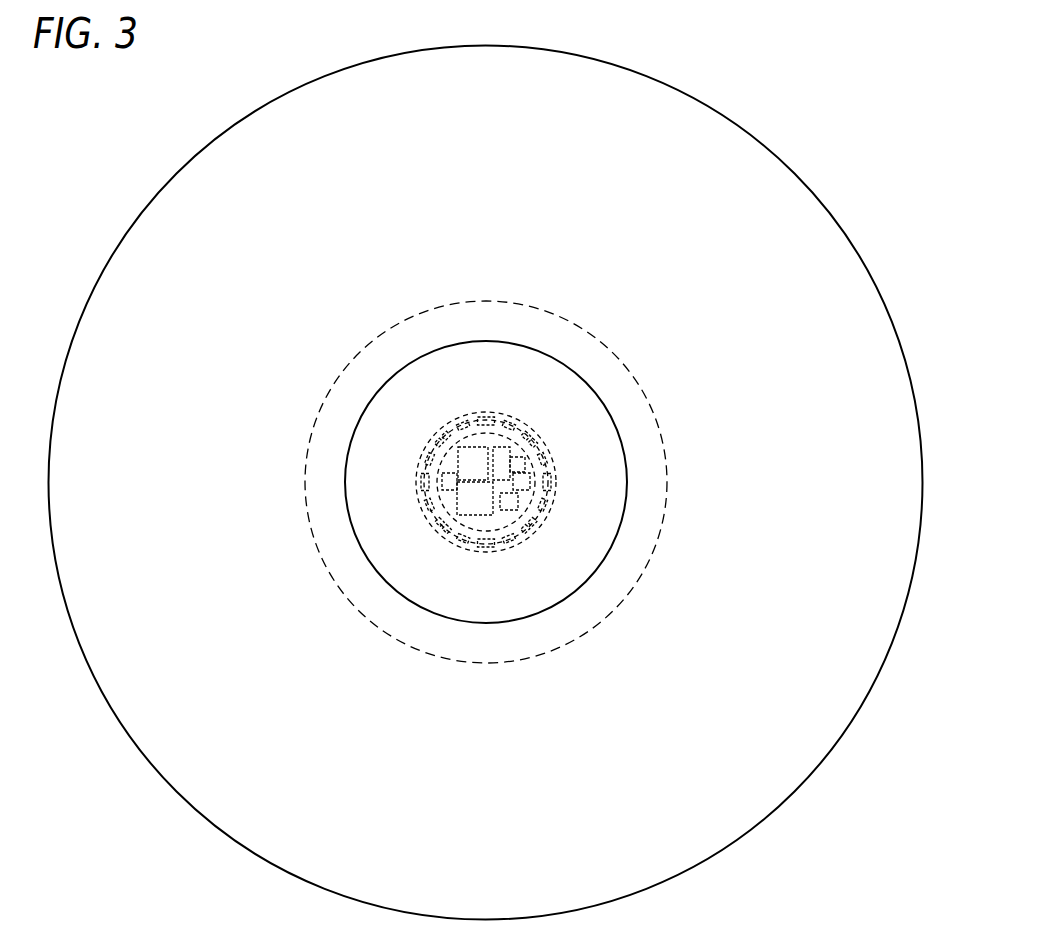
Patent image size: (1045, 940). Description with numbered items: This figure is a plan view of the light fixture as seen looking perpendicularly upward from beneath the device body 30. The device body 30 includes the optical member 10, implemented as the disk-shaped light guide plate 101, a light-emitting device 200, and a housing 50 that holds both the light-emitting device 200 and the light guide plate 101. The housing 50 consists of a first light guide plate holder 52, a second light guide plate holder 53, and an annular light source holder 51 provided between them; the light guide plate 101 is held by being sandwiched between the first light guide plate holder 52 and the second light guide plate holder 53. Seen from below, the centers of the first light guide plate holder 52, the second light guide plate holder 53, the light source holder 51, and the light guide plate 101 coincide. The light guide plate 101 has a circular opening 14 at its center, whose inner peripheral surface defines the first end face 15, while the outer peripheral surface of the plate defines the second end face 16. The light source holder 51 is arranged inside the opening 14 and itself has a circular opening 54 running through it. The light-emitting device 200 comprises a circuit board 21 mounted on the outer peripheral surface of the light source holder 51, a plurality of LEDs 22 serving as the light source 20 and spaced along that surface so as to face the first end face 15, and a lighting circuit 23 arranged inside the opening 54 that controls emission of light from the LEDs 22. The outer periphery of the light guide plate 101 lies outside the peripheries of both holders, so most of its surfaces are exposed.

The optical member 10 is at (496, 472).
The light guide plate 101 is at (486, 472).
The second end face 16 is at (486, 472).
The device body 30 is at (732, 108).
The housing 50 is at (525, 482).
The first light guide plate holder 52 is at (615, 387).
The second light guide plate holder 53 is at (612, 497).
The light source holder 51 is at (547, 483).
The opening 14 is at (505, 415).
The first end face 15 is at (531, 431).
The opening 54 is at (493, 518).
The light-emitting device 200 is at (338, 477).
The circuit board 21 is at (417, 462).
The LEDs 22 is at (369, 475).
The light source 20 is at (486, 473).
The lighting circuit 23 is at (457, 495).